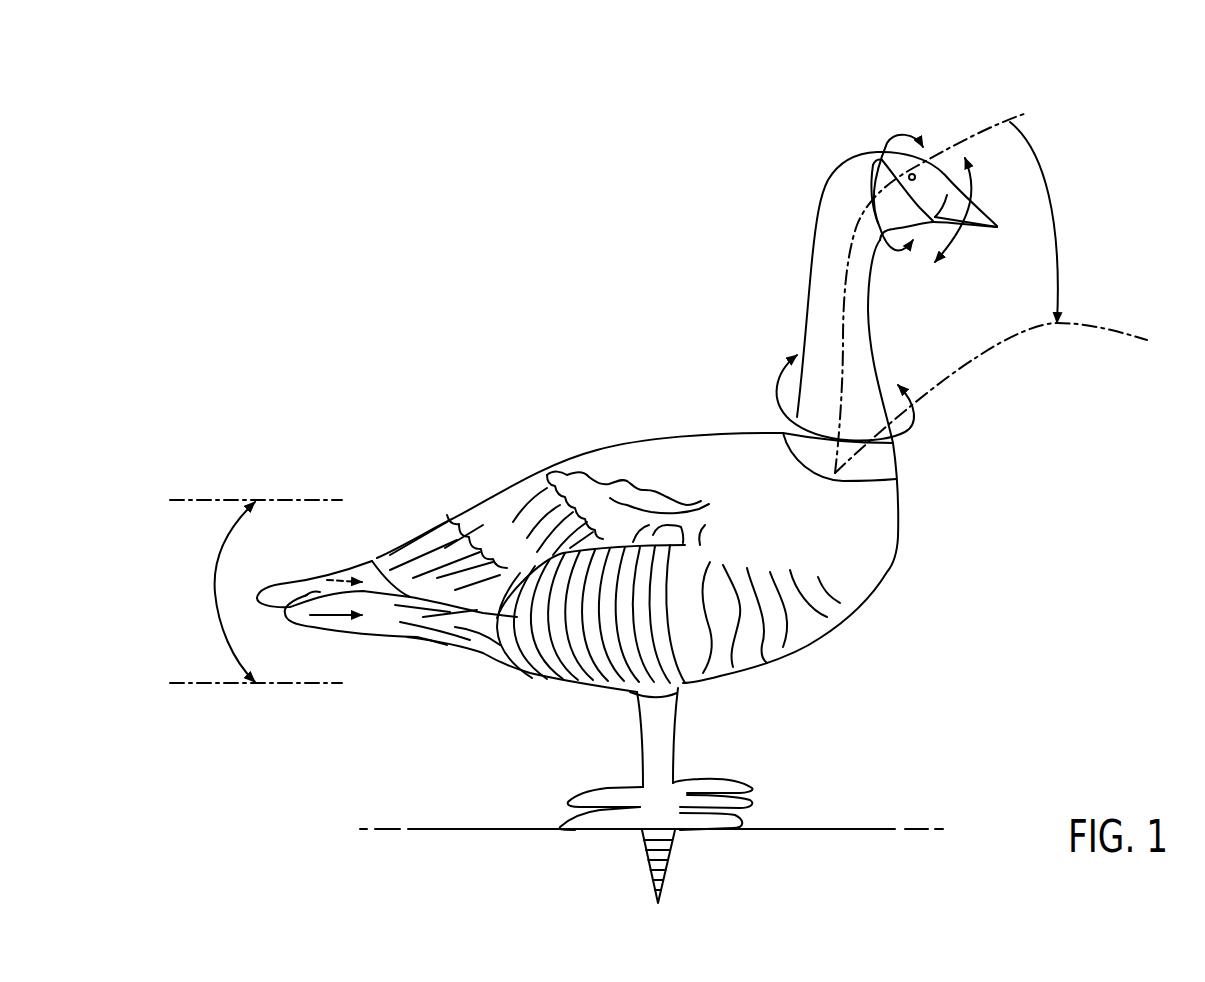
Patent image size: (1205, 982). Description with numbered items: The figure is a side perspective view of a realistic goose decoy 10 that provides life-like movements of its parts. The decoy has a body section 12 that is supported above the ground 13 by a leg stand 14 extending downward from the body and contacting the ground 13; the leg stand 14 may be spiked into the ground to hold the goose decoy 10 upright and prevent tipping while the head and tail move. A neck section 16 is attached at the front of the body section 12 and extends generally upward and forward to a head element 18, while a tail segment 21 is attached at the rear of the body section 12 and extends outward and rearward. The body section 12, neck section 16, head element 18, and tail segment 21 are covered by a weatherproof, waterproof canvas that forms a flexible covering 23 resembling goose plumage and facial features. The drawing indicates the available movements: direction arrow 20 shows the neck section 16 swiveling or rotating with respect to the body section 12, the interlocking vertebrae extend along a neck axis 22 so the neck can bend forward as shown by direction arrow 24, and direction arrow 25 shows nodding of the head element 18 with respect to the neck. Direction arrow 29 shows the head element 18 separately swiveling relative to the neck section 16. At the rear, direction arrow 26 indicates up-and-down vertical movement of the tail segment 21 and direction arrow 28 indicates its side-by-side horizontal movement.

The goose decoy 10 is at (525, 348).
The body section 12 is at (837, 655).
The ground 13 is at (475, 842).
The leg stand 14 is at (712, 748).
The neck section 16 is at (790, 292).
The head element 18 is at (900, 113).
The direction arrow 20 is at (774, 386).
The tail segment 21 is at (403, 660).
The neck axis 22 is at (970, 138).
The flexible covering 23 is at (498, 505).
The direction arrow 24 is at (1050, 207).
The direction arrow 25 is at (960, 242).
The direction arrow 26 is at (215, 593).
The direction arrow 28 is at (290, 583).
The direction arrow 29 is at (893, 136).